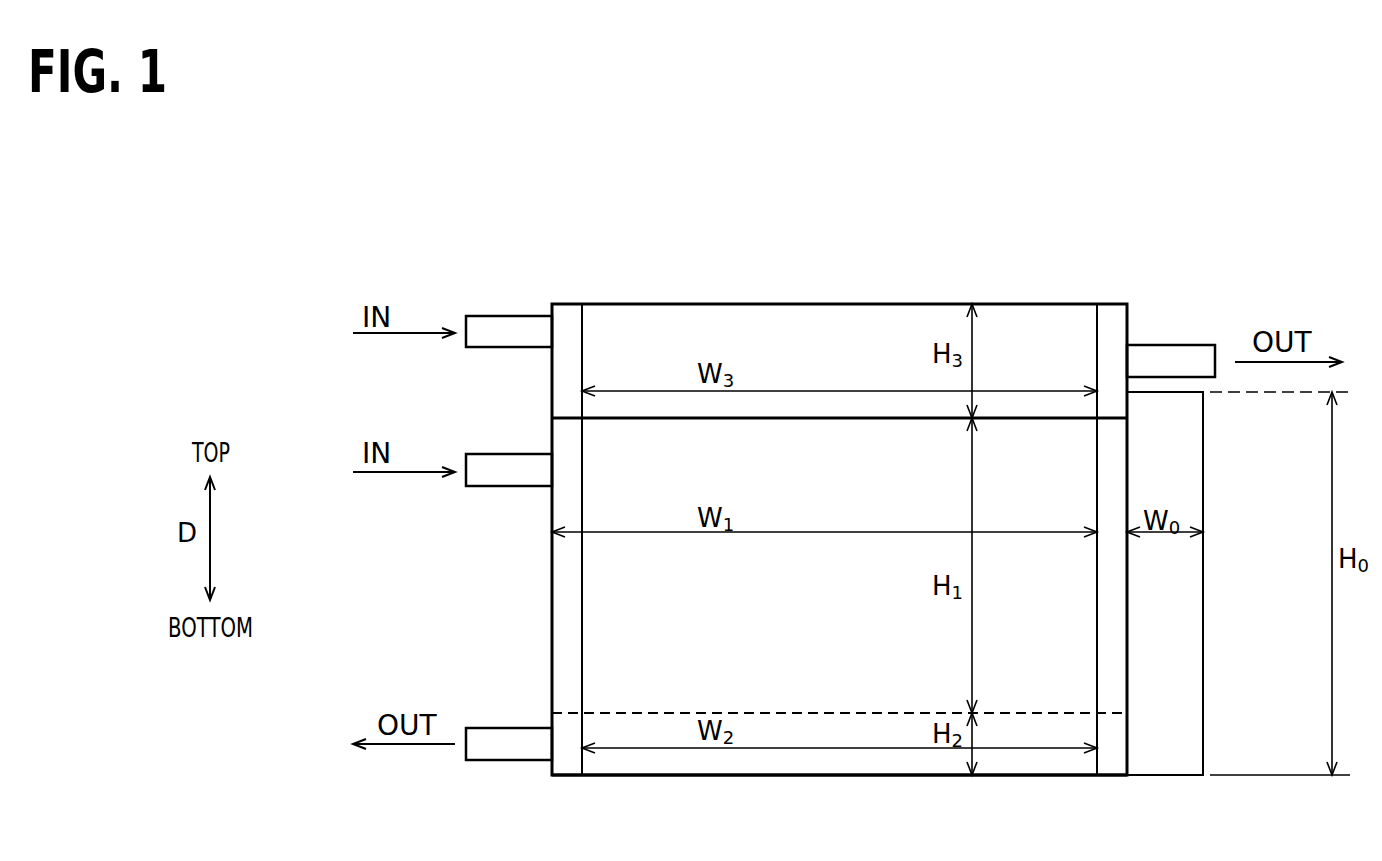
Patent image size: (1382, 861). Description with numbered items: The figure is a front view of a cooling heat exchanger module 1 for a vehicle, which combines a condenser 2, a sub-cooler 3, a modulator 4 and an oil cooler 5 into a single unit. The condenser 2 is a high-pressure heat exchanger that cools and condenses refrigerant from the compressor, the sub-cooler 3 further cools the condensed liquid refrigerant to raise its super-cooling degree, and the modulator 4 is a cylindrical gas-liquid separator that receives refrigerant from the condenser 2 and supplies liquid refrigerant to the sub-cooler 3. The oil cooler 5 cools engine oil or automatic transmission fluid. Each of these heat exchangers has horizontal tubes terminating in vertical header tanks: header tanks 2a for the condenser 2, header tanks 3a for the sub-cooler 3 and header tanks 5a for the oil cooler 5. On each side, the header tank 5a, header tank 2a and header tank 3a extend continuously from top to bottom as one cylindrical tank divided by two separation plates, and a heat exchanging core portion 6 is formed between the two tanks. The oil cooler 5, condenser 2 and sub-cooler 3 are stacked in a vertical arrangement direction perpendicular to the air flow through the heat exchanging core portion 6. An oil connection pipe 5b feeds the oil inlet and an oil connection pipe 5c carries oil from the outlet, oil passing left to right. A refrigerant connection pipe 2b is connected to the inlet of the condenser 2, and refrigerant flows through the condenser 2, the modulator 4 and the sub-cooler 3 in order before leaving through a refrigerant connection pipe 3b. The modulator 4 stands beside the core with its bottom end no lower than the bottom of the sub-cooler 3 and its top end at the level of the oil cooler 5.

The heat exchanger module 1 is at (887, 280).
The condenser 2 is at (1037, 588).
The header tank 2a is at (565, 617).
The refrigerant connection pipe 2b is at (487, 473).
The sub-cooler 3 is at (1015, 755).
The header tank 3a is at (569, 765).
The refrigerant connection pipe 3b is at (470, 745).
The modulator 4 is at (1167, 733).
The oil cooler 5 is at (980, 348).
The header tank 5a is at (562, 382).
The oil connection pipe 5b is at (479, 330).
The oil connection pipe 5c is at (1137, 355).
The heat exchanging core portion 6 is at (934, 539).